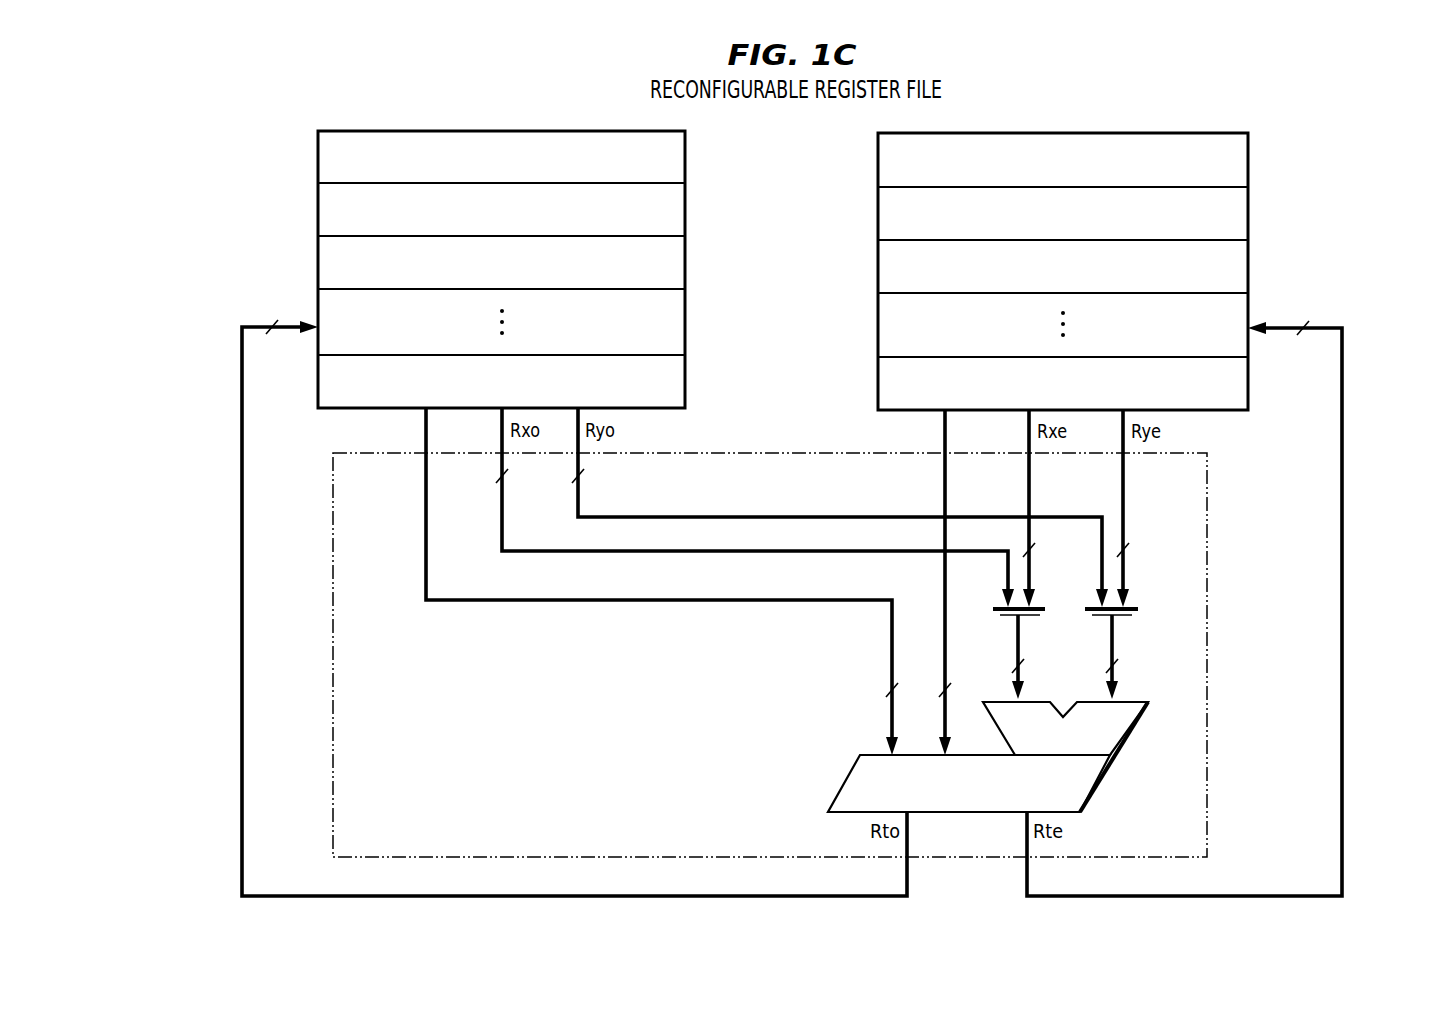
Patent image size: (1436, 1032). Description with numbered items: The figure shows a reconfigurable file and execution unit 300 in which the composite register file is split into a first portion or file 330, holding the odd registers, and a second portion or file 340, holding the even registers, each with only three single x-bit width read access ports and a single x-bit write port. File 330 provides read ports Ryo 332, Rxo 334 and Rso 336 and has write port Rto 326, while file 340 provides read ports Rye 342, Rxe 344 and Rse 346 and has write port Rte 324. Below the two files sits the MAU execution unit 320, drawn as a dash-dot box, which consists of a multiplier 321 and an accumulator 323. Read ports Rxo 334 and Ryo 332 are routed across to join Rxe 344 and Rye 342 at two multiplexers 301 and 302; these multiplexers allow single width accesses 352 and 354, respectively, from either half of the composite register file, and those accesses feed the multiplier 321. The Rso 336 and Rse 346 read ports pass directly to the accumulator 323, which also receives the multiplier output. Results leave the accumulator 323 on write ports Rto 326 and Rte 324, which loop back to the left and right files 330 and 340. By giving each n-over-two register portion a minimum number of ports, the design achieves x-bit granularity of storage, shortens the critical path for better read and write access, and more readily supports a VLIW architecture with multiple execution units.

The reconfigurable file and execution unit 300 is at (266, 136).
The first portion or file 330 is at (318, 210).
The second portion or file 340 is at (878, 212).
The MAU execution unit 320 is at (333, 468).
The read port Rso 336 is at (426, 598).
The read port Rxo 334 is at (502, 546).
The read port Ryo 332 is at (636, 515).
The read port Rse 346 is at (945, 490).
The read port Rxe 344 is at (1029, 490).
The read port Rye 342 is at (1123, 490).
The multiplexer 302 is at (1003, 618).
The multiplexer 301 is at (1136, 606).
The single width access 354 is at (1018, 643).
The single width access 352 is at (1112, 643).
The multiplier 321 is at (1130, 735).
The accumulator 323 is at (1095, 795).
The write port Rto 326 is at (907, 890).
The write port Rte 324 is at (1342, 876).